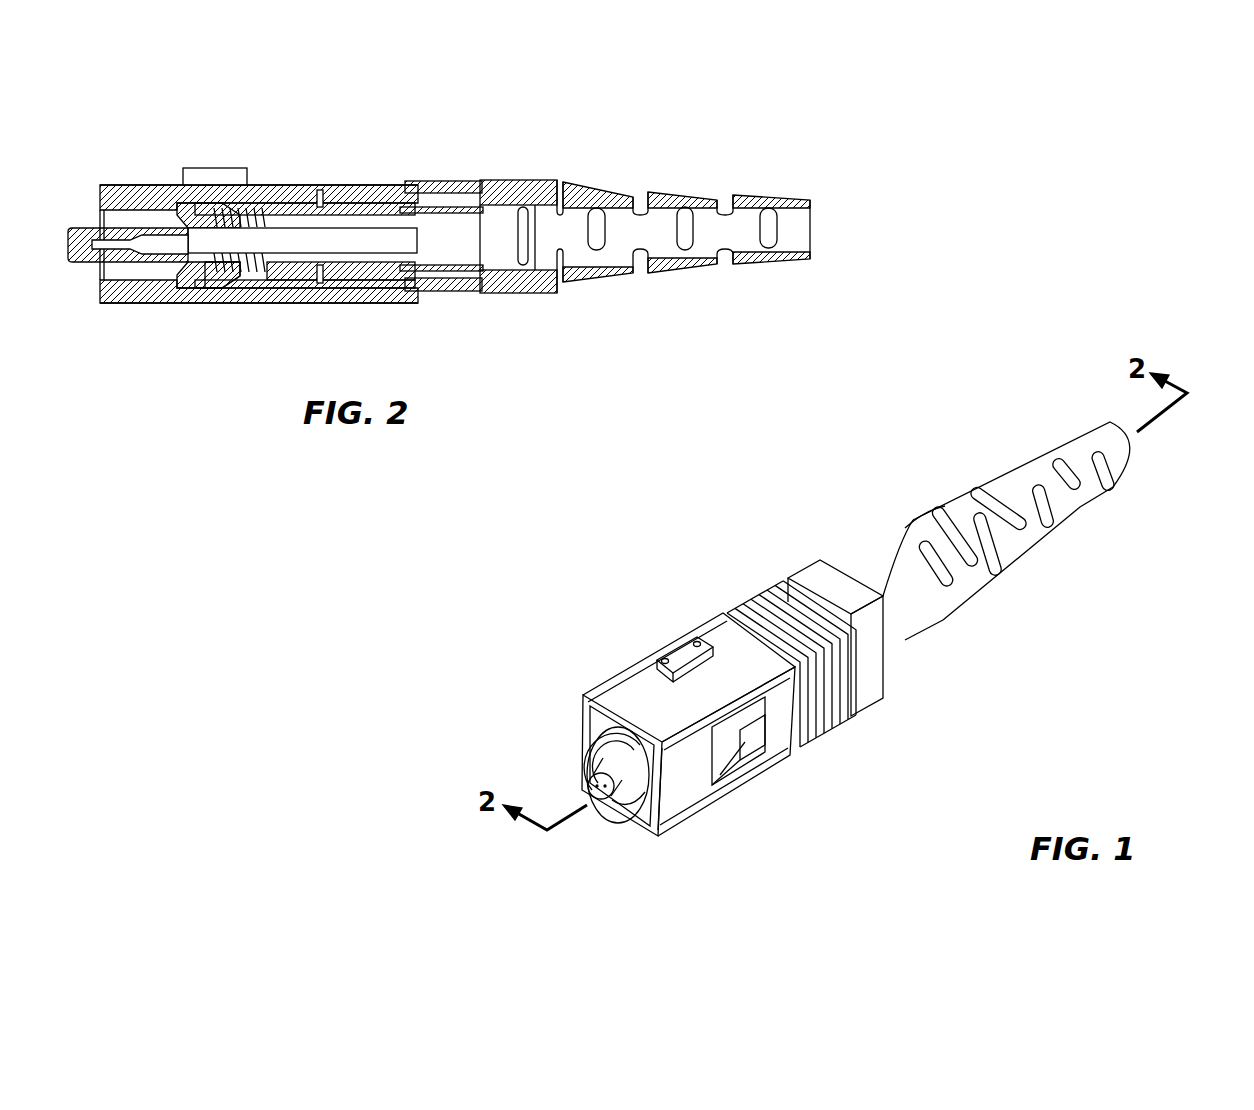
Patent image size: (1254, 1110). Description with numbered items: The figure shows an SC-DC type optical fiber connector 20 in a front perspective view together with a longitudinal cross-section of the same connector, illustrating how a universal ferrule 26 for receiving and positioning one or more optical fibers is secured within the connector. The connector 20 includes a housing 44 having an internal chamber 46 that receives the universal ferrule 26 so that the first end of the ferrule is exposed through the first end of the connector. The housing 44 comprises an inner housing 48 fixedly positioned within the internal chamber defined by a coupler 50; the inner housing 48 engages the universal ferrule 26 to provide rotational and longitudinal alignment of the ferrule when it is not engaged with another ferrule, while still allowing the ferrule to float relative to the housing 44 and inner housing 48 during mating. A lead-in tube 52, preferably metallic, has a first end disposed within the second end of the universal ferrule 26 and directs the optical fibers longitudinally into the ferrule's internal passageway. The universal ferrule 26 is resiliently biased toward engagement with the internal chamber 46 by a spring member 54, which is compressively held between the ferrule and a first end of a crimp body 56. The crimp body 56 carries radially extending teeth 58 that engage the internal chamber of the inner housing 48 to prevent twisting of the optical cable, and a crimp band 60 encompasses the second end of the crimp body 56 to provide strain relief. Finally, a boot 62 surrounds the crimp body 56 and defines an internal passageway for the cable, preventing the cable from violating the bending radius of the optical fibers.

In FIG. 2, the optical fiber connector 20 is at (490, 352).
In FIG. 1, the optical fiber connector 20 is at (1025, 705).
In FIG. 2, the universal ferrule 26 is at (78, 264).
In FIG. 1, the universal ferrule 26 is at (613, 765).
In FIG. 2, the housing 44 is at (270, 158).
In FIG. 1, the housing 44 is at (815, 784).
In FIG. 2, the internal chamber 46 is at (214, 203).
In FIG. 1, the internal chamber 46 is at (637, 802).
In FIG. 2, the inner housing 48 is at (186, 168).
In FIG. 1, the inner housing 48 is at (613, 745).
In FIG. 2, the coupler 50 is at (147, 185).
In FIG. 1, the coupler 50 is at (637, 681).
In FIG. 2, the lead-in tube 52 is at (200, 258).
In FIG. 2, the spring member 54 is at (222, 285).
In FIG. 2, the crimp body 56 is at (318, 186).
In FIG. 2, the radially extending teeth 58 is at (410, 190).
In FIG. 2, the crimp band 60 is at (443, 271).
In FIG. 2, the boot 62 is at (608, 275).
In FIG. 1, the boot 62 is at (1028, 538).